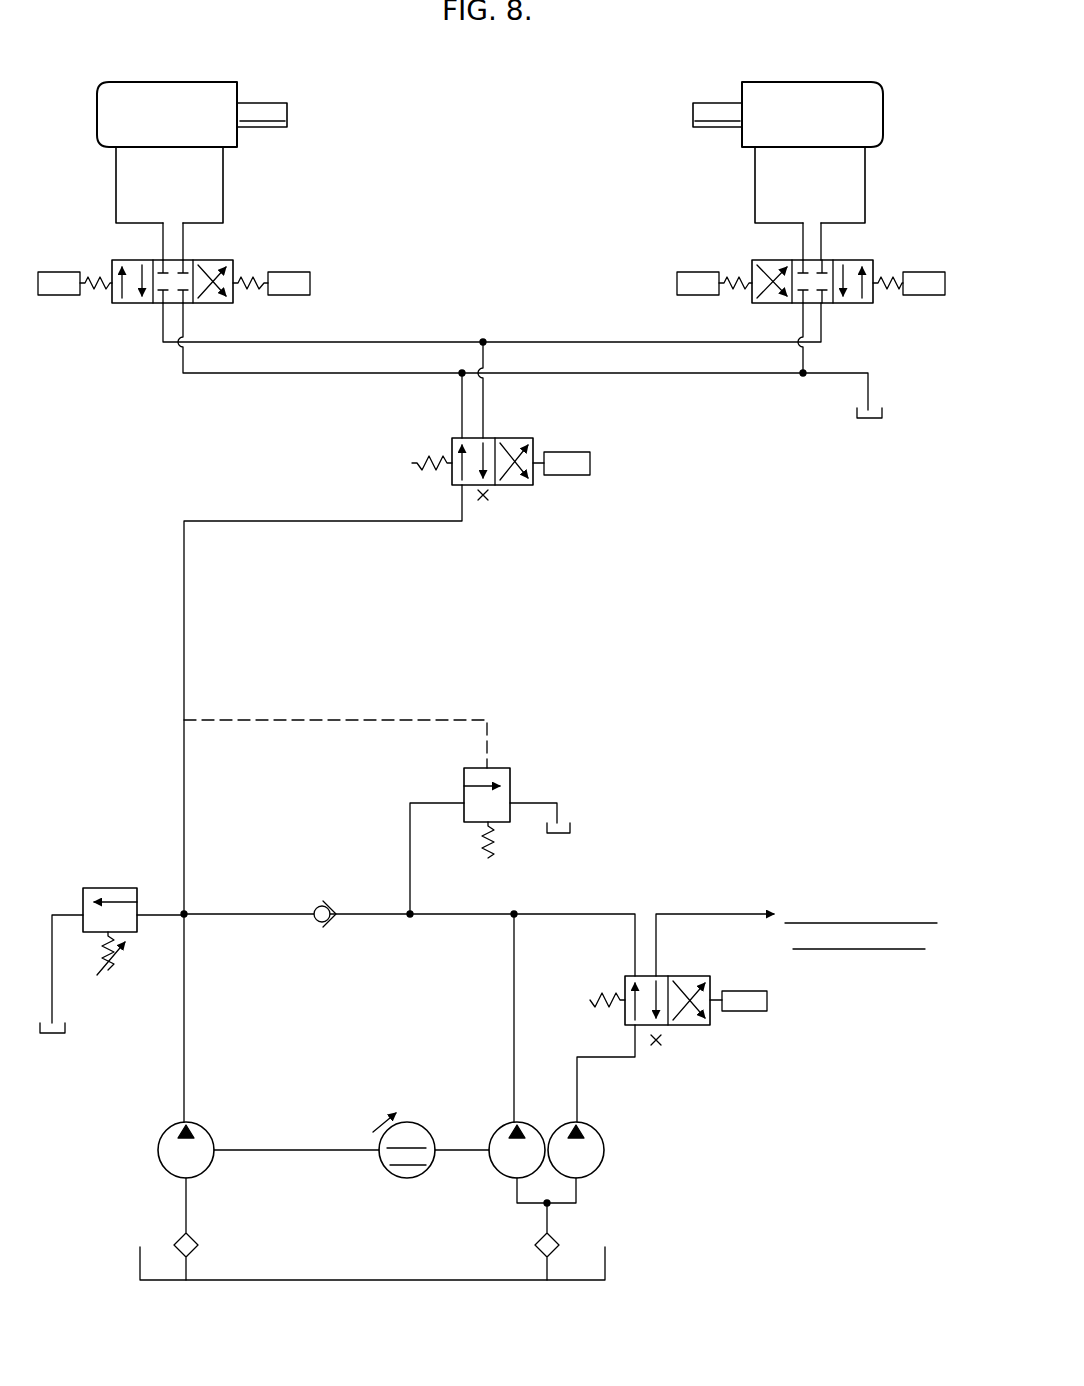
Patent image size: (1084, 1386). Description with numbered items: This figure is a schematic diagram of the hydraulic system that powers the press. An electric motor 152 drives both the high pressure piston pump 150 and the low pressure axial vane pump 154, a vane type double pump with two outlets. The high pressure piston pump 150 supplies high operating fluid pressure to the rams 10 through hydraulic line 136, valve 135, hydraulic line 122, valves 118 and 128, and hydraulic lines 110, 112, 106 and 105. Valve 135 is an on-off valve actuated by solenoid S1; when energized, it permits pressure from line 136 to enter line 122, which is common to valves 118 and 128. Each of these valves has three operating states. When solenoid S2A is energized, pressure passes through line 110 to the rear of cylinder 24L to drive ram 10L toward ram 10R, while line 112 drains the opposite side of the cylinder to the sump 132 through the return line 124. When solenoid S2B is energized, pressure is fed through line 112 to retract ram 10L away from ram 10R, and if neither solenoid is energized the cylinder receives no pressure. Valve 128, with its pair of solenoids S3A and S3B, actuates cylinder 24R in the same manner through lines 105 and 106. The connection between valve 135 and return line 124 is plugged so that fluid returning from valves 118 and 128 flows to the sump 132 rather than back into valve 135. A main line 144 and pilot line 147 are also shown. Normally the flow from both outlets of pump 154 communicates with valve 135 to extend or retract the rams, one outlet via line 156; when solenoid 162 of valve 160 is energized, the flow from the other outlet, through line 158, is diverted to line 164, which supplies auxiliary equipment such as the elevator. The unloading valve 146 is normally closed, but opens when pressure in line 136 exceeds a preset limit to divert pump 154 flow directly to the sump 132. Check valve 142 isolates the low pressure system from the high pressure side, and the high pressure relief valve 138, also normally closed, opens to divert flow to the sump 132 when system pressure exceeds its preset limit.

The rams 10 is at (250, 103).
The left ram 10L is at (290, 108).
The right ram 10R is at (690, 110).
The left cylinder 24L is at (163, 90).
The right cylinder 24R is at (829, 85).
The hydraulic line 105 is at (867, 173).
The hydraulic line 106 is at (755, 165).
The hydraulic line 110 is at (116, 180).
The hydraulic line 112 is at (223, 177).
The valve 118 is at (140, 303).
The hydraulic line 122 is at (361, 342).
The return line 124 is at (295, 374).
The valve 128 is at (852, 303).
The sump 132 is at (882, 414).
The valve 135 is at (520, 486).
The hydraulic line 136 is at (332, 522).
The high pressure relief valve 138 is at (88, 888).
The check valve 142 is at (323, 905).
The main pressure line 144 is at (475, 915).
The unloading valve 146 is at (510, 768).
The pilot line 147 is at (410, 878).
The high pressure piston pump 150 is at (162, 1130).
The electric motor 152 is at (423, 1125).
The low pressure axial vane pump 154 is at (555, 1130).
The pump line 156 is at (514, 968).
The line 158 is at (575, 1060).
The valve 160 is at (693, 1025).
The solenoid 162 is at (767, 998).
The line 164 is at (720, 914).
The solenoid S1 is at (572, 452).
The solenoid S2A is at (58, 272).
The solenoid S2B is at (286, 272).
The solenoid S3A is at (922, 272).
The solenoid S3B is at (698, 272).